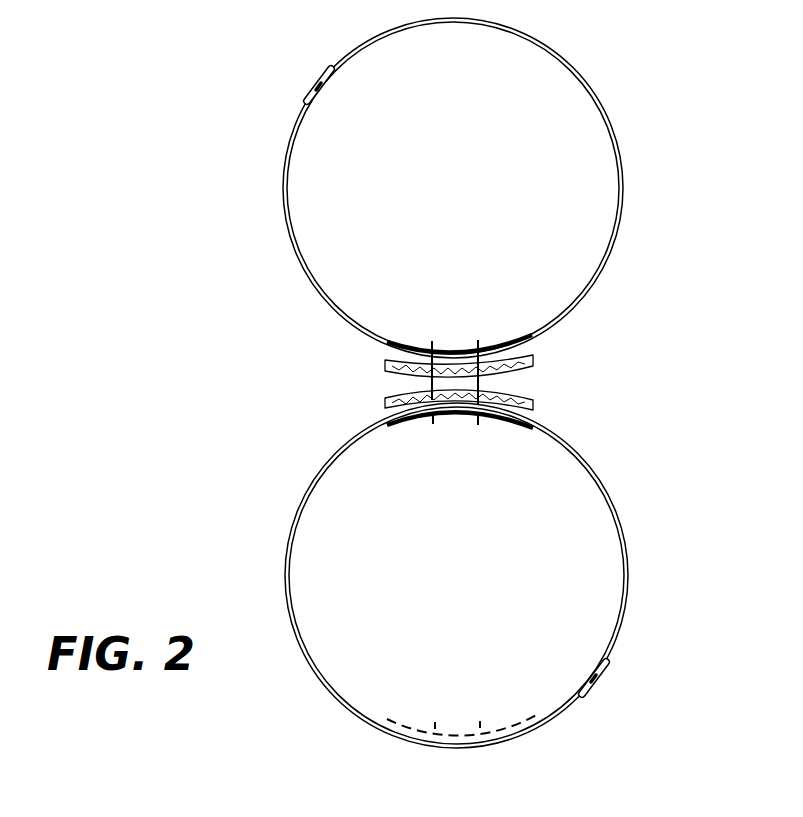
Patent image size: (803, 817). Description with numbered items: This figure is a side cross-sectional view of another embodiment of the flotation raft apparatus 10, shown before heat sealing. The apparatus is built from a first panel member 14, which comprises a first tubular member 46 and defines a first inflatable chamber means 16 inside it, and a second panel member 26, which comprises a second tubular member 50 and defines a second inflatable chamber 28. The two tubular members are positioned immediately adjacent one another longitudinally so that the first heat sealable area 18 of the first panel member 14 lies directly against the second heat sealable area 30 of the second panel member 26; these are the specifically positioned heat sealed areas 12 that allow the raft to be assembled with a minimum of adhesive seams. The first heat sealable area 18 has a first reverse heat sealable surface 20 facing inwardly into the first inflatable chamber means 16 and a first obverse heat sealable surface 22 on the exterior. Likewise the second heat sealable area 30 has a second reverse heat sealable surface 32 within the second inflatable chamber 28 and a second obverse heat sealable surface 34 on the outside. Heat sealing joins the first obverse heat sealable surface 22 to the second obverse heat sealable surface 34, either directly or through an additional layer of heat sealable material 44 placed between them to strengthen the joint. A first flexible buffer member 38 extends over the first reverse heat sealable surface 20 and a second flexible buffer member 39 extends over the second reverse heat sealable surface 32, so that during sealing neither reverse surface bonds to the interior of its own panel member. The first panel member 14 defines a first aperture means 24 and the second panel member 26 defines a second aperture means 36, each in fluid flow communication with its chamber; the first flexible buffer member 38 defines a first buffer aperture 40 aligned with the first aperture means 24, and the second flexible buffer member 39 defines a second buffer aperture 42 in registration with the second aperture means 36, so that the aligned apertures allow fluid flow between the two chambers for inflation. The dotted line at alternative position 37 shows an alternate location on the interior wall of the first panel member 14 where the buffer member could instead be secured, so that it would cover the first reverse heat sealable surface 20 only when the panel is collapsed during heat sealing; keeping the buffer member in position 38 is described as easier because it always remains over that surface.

The flotation raft apparatus 10 is at (243, 375).
The heat sealed areas 12 is at (527, 386).
The first panel member 14 is at (627, 537).
The first inflatable chamber means 16 is at (502, 580).
The first heat sealable area 18 is at (530, 409).
The first reverse heat sealable surface 20 is at (502, 418).
The first obverse heat sealable surface 22 is at (390, 400).
The first aperture means 24 is at (453, 410).
The second panel member 26 is at (612, 130).
The second inflatable chamber 28 is at (465, 138).
The second heat sealable area 30 is at (387, 350).
The second reverse heat sealable surface 32 is at (502, 350).
The second obverse heat sealable surface 34 is at (385, 373).
The second aperture means 36 is at (443, 368).
The alternative position 37 is at (410, 728).
The first flexible buffer member 38 is at (413, 420).
The second flexible buffer member 39 is at (446, 352).
The first buffer aperture 40 is at (462, 410).
The second buffer aperture 42 is at (470, 350).
The additional layer of heat sealable material 44 is at (519, 378).
The first tubular member 46 is at (627, 622).
The second tubular member 50 is at (545, 42).